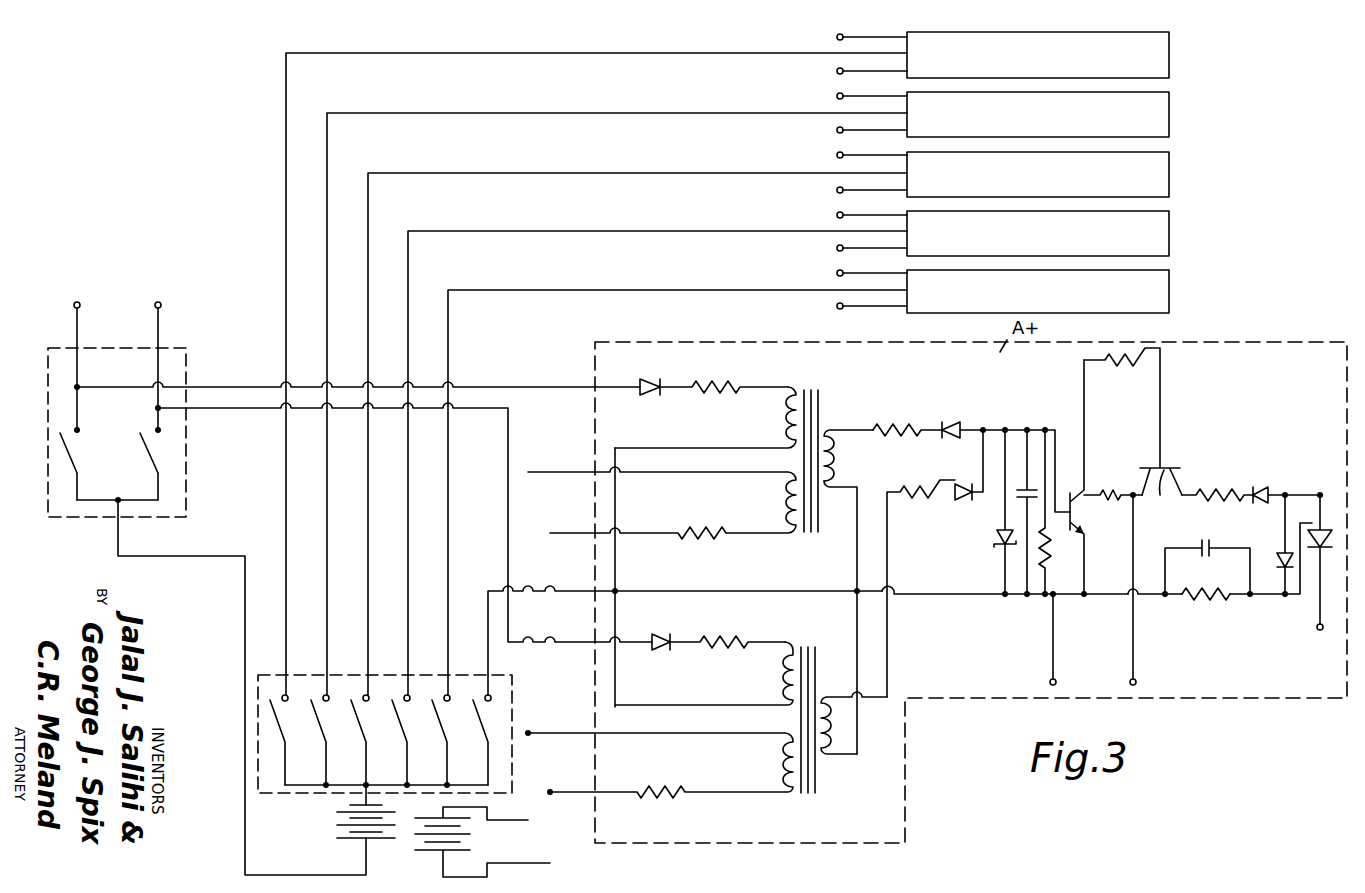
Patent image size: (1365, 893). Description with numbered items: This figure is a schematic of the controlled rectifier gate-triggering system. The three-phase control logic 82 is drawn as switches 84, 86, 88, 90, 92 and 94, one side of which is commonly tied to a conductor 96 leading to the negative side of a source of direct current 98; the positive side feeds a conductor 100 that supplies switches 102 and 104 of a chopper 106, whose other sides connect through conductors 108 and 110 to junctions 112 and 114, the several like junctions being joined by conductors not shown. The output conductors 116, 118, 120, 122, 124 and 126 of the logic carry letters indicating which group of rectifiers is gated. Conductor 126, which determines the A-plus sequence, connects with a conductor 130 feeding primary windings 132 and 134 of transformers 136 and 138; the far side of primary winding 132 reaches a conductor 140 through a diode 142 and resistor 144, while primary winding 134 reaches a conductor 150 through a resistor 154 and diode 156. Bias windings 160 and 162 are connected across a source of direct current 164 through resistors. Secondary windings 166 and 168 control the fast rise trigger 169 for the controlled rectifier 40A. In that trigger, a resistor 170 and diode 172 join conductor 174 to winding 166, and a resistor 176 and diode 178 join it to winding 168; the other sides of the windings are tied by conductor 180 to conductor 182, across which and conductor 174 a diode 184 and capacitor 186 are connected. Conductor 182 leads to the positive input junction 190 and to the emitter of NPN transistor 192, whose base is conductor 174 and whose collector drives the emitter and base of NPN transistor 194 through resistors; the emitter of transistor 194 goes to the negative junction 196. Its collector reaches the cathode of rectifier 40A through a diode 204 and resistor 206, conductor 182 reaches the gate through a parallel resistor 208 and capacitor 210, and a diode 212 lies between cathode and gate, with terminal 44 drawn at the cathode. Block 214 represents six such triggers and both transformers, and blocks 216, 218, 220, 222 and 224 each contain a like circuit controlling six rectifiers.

The controlled rectifier 40A is at (1326, 532).
The output terminal 44 is at (1319, 630).
The three-phase control logic 82 is at (313, 793).
The switch 84 is at (283, 735).
The switch 86 is at (326, 736).
The switch 88 is at (368, 735).
The switch 90 is at (408, 737).
The switch 92 is at (448, 742).
The switch 94 is at (485, 738).
The conductor 96 is at (370, 800).
The source of direct current 98 is at (385, 827).
The conductor 100 is at (272, 875).
The switch 102 is at (153, 466).
The switch 104 is at (70, 452).
The chopper 106 is at (190, 377).
The conductor 108 is at (158, 345).
The conductor 110 is at (77, 345).
The junction 112 is at (158, 305).
The junction 114 is at (77, 305).
The output conductor 116 is at (572, 53).
The output conductor 118 is at (538, 113).
The output conductor 120 is at (608, 173).
The output conductor 122 is at (588, 231).
The output conductor 124 is at (606, 290).
The output conductor 126 is at (488, 610).
The conductor 130 is at (618, 588).
The primary winding 132 is at (782, 416).
The primary winding 134 is at (780, 664).
The transformer 136 is at (824, 410).
The transformer 138 is at (822, 660).
The conductor 140 is at (490, 387).
The diode 142 is at (640, 400).
The resistor 144 is at (706, 387).
The conductor 150 is at (508, 452).
The resistor 154 is at (712, 642).
The diode 156 is at (664, 640).
The direct-current bias winding 160 is at (786, 502).
The bias winding 162 is at (782, 754).
The source of direct current 164 is at (468, 846).
The secondary winding 166 is at (840, 471).
The secondary winding 168 is at (824, 756).
The fast rise trigger 169 is at (958, 608).
The resistor 170 is at (895, 425).
The diode 172 is at (947, 422).
The conductor 174 is at (1053, 414).
The resistor 176 is at (936, 500).
The diode 178 is at (968, 503).
The conductor 180 is at (857, 548).
The conductor 182 is at (988, 598).
The diode 184 is at (998, 545).
The capacitor 186 is at (1023, 433).
The junction 190 is at (1055, 676).
The NPN transistor 192 is at (1078, 514).
The NPN transistor 194 is at (1133, 439).
The junction 196 is at (1137, 678).
The diode 204 is at (1262, 488).
The resistor 206 is at (1225, 488).
The resistor 208 is at (1208, 600).
The capacitor 210 is at (1209, 551).
The diode 212 is at (1283, 598).
The block 214 is at (1268, 354).
The block 216 is at (1172, 302).
The block 218 is at (1172, 240).
The block 220 is at (1172, 182).
The block 222 is at (1172, 122).
The block 224 is at (1172, 70).